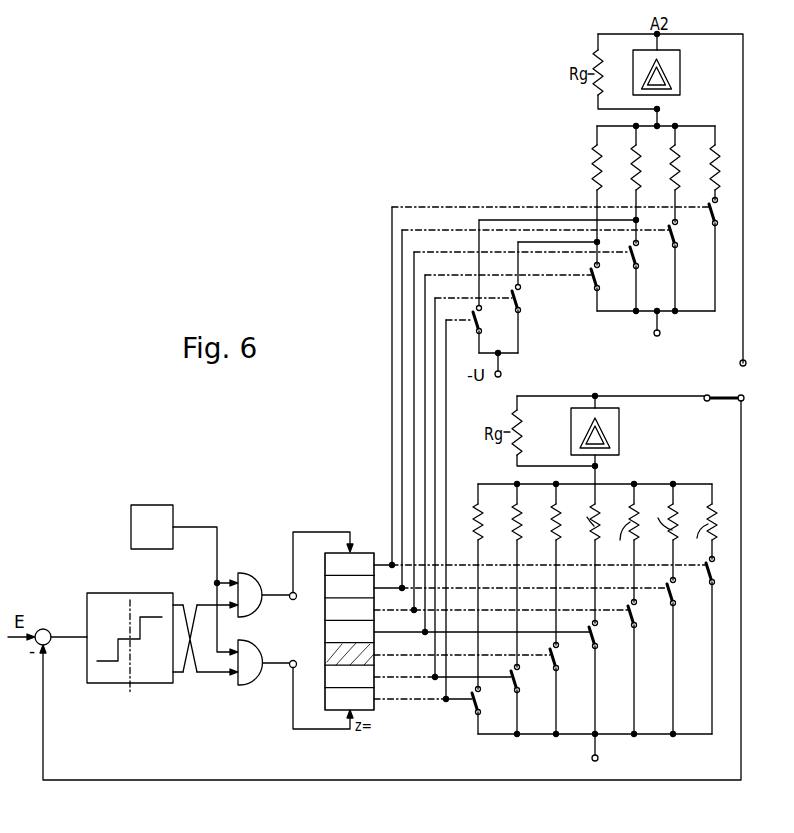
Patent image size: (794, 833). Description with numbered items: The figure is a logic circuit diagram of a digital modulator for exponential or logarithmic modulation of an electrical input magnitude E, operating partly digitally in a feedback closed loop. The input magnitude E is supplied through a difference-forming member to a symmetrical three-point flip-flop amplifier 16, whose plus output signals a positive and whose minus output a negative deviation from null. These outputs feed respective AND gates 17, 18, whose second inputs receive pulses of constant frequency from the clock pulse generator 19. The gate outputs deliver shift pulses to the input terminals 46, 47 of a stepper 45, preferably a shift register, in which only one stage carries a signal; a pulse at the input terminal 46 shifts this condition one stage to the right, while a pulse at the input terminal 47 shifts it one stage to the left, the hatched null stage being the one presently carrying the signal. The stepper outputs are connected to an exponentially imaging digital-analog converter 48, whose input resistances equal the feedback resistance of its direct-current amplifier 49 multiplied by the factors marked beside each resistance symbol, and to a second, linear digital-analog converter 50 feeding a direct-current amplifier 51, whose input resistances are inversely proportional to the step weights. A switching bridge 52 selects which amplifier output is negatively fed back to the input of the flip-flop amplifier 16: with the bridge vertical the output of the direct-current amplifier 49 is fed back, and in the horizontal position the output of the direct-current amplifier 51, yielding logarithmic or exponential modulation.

The symmetrical three-point flip-flop amplifier 16 is at (138, 650).
The AND gate 17 is at (252, 668).
The AND gate 18 is at (254, 585).
The clock pulse generator 19 is at (152, 505).
The stepper 45 is at (328, 564).
The input terminal 46 is at (295, 654).
The input terminal 47 is at (295, 609).
The exponentially imaging digital-analog converter 48 is at (735, 508).
The direct-current amplifier 49 is at (619, 432).
The second digital-analog converter 50 is at (738, 151).
The direct-current amplifier 51 is at (680, 73).
The switching bridge 52 is at (719, 383).